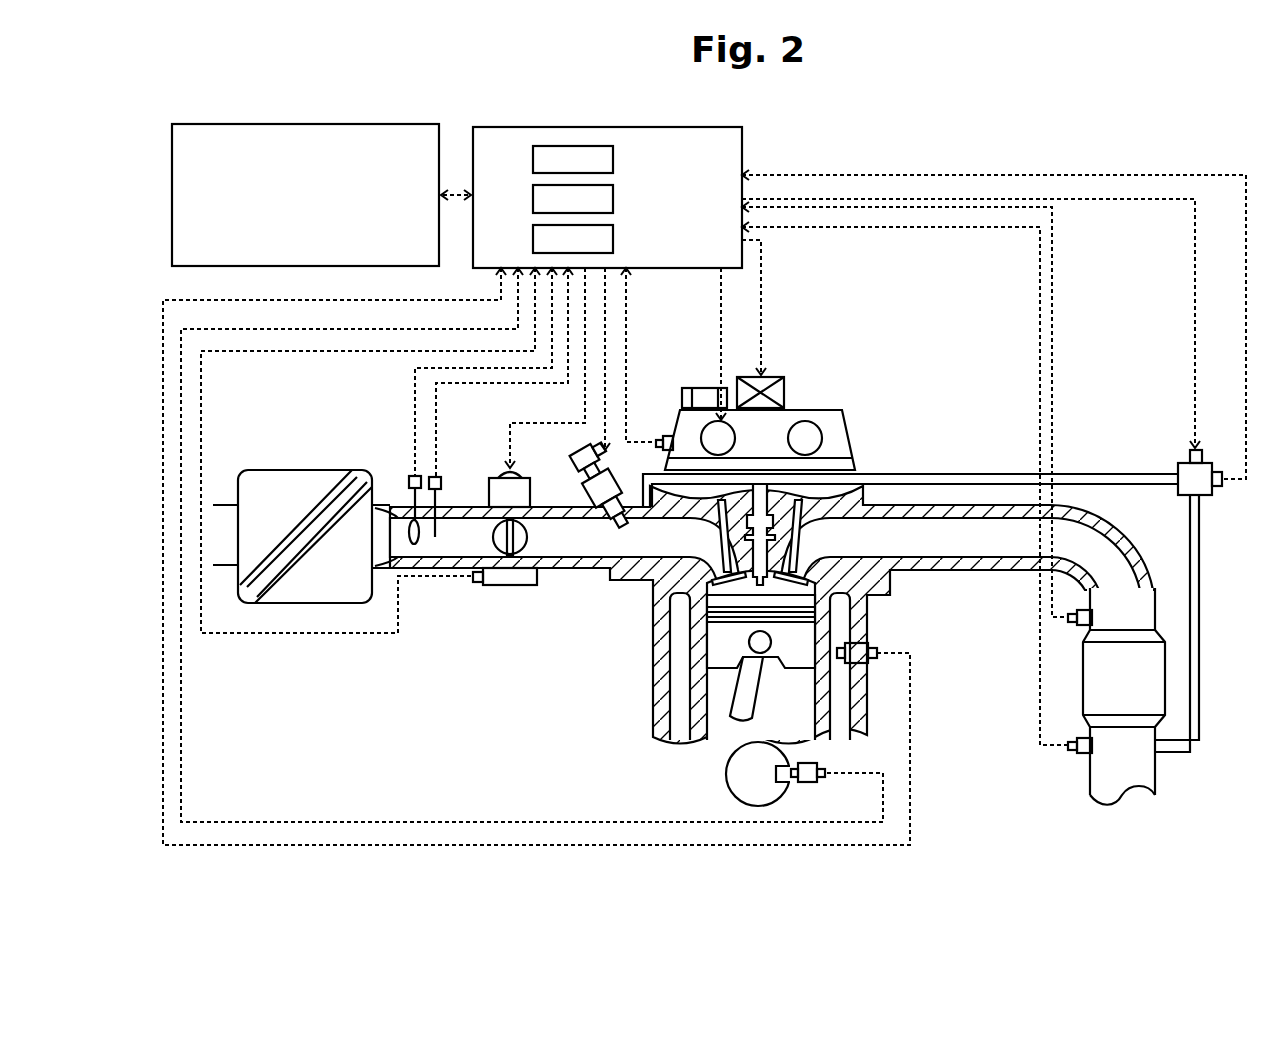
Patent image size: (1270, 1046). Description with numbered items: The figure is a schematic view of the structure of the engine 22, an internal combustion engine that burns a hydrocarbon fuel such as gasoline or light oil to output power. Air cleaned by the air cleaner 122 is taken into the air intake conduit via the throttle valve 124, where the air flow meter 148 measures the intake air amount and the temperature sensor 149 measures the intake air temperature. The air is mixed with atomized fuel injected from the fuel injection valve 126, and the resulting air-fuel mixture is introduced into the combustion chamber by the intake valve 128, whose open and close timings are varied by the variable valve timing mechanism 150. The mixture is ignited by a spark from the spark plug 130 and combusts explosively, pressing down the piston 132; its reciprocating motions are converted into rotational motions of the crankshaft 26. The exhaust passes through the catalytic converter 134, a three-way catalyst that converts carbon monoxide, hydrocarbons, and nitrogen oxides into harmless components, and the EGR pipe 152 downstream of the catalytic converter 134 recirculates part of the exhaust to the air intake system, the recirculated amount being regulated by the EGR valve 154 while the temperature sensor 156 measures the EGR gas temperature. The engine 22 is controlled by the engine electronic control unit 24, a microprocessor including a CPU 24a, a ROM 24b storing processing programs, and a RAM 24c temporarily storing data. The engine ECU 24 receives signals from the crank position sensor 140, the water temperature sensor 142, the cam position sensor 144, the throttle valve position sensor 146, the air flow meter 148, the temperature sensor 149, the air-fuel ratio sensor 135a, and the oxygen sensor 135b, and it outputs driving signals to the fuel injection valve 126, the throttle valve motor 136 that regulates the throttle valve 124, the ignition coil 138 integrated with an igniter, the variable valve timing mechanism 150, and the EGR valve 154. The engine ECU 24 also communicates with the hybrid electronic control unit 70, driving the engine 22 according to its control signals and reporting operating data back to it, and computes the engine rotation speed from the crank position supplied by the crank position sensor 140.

The engine 22 is at (807, 348).
The engine electronic control unit 24 is at (607, 126).
The CPU 24a is at (614, 160).
The ROM 24b is at (614, 200).
The RAM 24c is at (614, 243).
The crankshaft 26 is at (726, 775).
The hybrid electronic control unit 70 is at (306, 124).
The air cleaner 122 is at (306, 470).
The throttle valve 124 is at (530, 515).
The fuel injection valve 126 is at (578, 515).
The intake valve 128 is at (726, 561).
The spark plug 130 is at (803, 565).
The piston 132 is at (723, 641).
The catalytic converter 134 is at (1095, 664).
The air-fuel ratio sensor 135a is at (1082, 628).
The oxygen sensor 135b is at (1083, 755).
The throttle valve motor 136 is at (492, 476).
The ignition coil 138 is at (785, 394).
The crank position sensor 140 is at (810, 783).
The water temperature sensor 142 is at (870, 645).
The cam position sensor 144 is at (657, 440).
The throttle valve position sensor 146 is at (508, 587).
The air flow meter 148 is at (409, 478).
The temperature sensor 149 is at (436, 476).
The variable valve timing mechanism 150 is at (853, 447).
The EGR pipe 152 is at (1200, 614).
The EGR valve 154 is at (1187, 455).
The temperature sensor 156 is at (1220, 489).